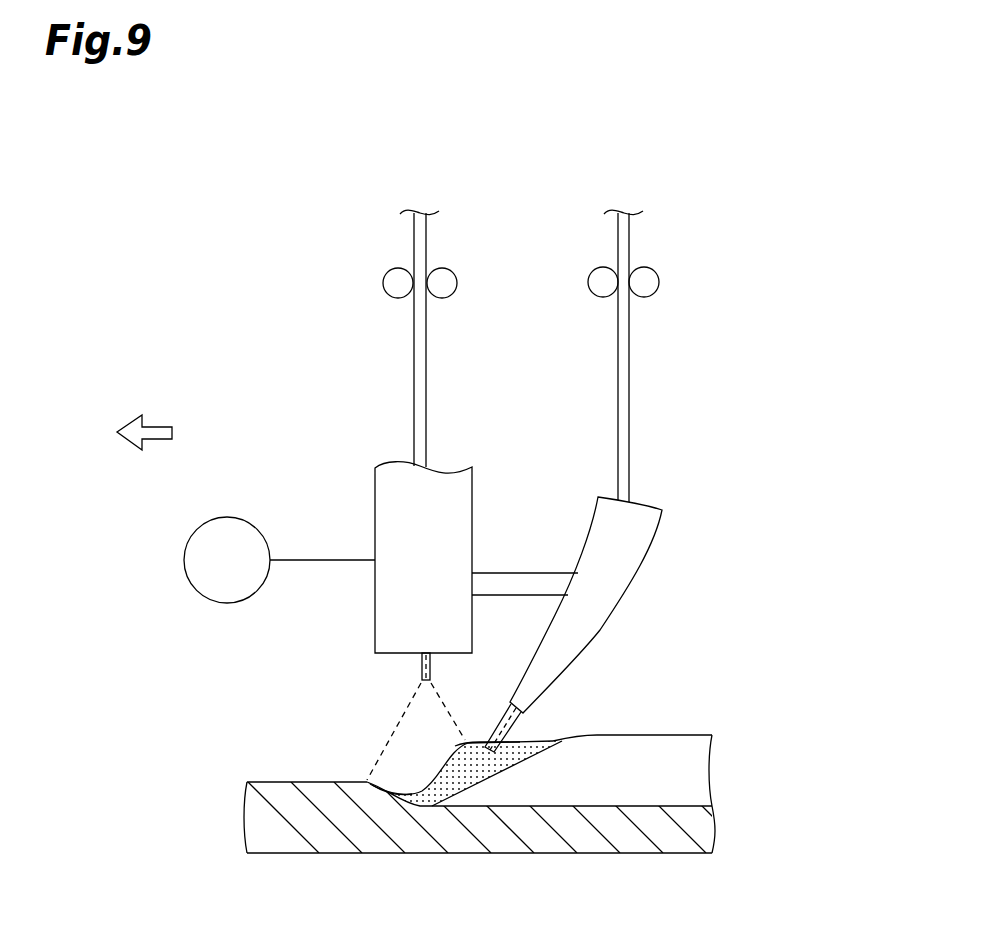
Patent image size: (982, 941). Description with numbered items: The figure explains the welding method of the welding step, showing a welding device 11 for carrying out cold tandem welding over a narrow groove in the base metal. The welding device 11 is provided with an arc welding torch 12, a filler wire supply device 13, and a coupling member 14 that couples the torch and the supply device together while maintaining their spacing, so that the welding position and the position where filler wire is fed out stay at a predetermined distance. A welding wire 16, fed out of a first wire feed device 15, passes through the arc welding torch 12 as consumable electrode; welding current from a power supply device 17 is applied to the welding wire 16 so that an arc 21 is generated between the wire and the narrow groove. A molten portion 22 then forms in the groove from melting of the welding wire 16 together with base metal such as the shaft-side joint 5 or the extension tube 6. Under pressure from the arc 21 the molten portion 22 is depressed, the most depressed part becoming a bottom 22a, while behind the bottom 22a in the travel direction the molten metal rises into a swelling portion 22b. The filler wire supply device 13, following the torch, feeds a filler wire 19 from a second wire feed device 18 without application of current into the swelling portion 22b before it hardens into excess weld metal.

The welding device 11 is at (764, 316).
The arc welding torch 12 is at (375, 503).
The filler wire supply device 13 is at (641, 565).
The coupling member 14 is at (519, 573).
The first wire feed device 15 is at (382, 287).
The welding wire 16 is at (413, 385).
The power supply device 17 is at (222, 517).
The second wire feed device 18 is at (660, 278).
The filler wire 19 is at (630, 383).
The arc 21 is at (395, 737).
The molten portion 22 is at (437, 793).
The bottom 22a is at (412, 791).
The swelling portion 22b is at (470, 742).
The shaft-side joint 5 is at (288, 843).
The extension tube 6 is at (660, 748).